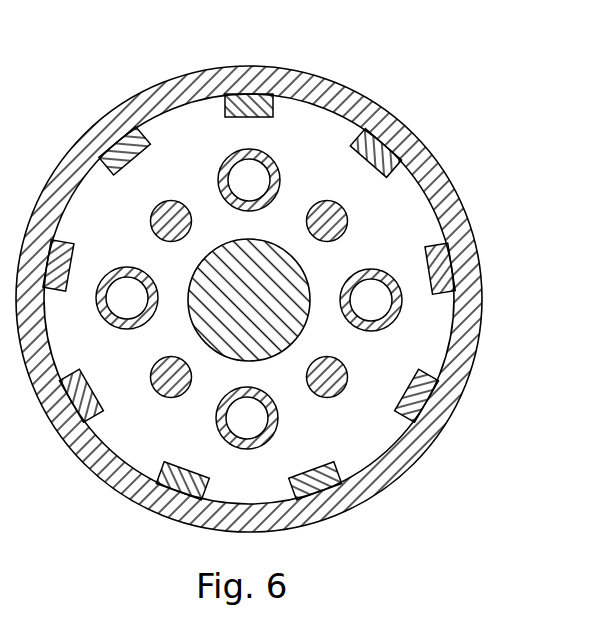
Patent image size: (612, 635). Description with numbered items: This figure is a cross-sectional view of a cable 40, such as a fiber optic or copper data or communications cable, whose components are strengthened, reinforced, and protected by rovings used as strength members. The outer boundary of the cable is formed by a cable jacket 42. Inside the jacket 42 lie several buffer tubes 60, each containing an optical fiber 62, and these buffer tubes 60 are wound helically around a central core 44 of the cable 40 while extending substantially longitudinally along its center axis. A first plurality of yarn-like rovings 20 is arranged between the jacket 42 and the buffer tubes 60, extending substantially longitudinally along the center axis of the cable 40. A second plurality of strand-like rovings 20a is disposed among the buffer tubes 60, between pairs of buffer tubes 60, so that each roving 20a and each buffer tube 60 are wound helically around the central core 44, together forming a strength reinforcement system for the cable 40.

The cable 40 is at (126, 63).
The cable jacket 42 is at (483, 276).
The roving 20 is at (372, 166).
The strand-like roving 20a is at (171, 201).
The central core 44 is at (262, 243).
The buffer tube 60 is at (278, 418).
The optical fiber 62 is at (232, 406).